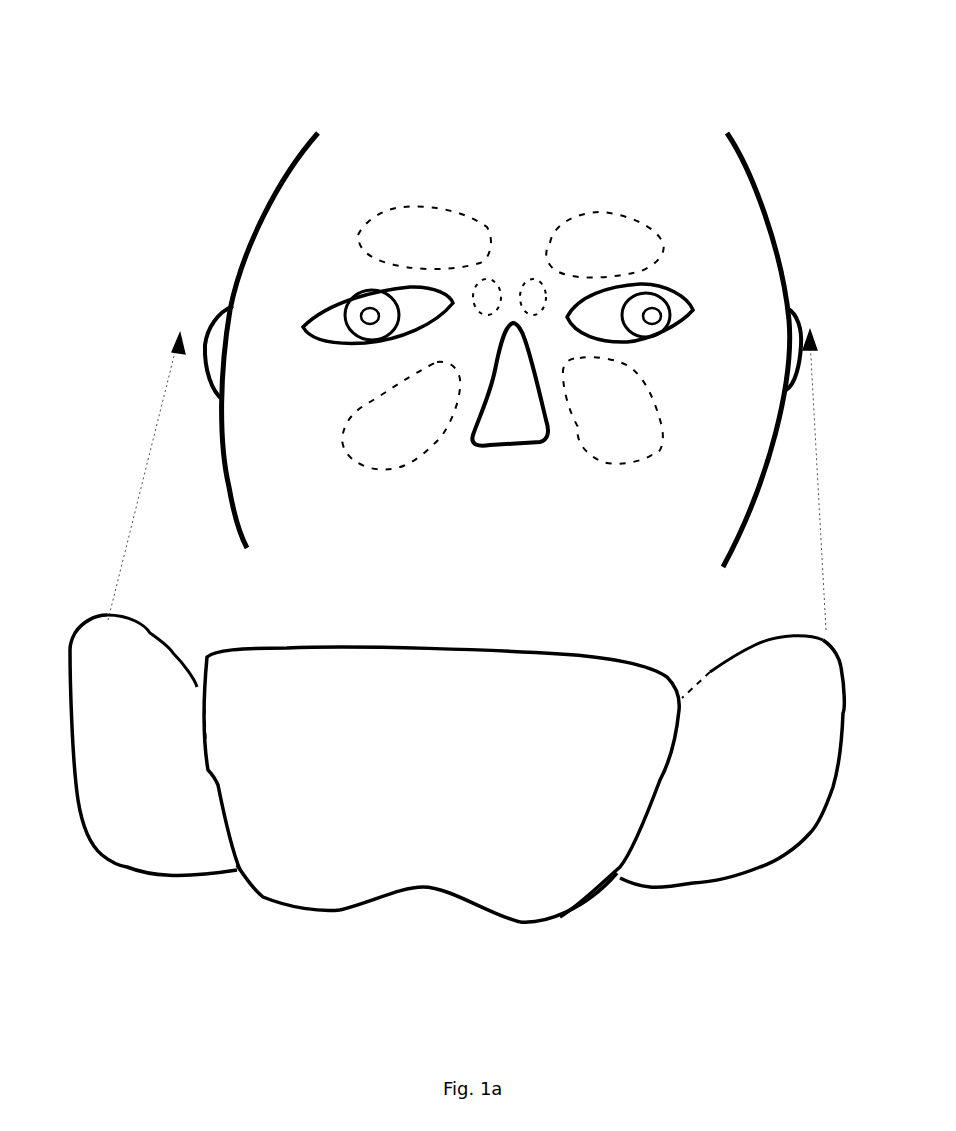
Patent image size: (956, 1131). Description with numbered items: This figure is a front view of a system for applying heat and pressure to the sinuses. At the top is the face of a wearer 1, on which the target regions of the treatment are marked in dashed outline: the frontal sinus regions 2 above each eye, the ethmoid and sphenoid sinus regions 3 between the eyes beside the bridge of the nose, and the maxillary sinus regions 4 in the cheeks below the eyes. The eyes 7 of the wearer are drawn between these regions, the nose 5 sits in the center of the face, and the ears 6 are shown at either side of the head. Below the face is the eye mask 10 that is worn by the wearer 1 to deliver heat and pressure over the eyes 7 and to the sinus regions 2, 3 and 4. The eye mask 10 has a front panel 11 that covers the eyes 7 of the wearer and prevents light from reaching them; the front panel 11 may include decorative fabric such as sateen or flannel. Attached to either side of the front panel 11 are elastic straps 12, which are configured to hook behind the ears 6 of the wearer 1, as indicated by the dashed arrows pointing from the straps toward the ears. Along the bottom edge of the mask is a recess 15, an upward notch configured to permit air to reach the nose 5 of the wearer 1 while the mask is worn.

The wearer 1 is at (650, 54).
The frontal sinus regions 2 is at (417, 200).
The ethmoid and sphenoid sinus regions 3 is at (520, 277).
The maxillary sinus regions 4 is at (337, 428).
The nose 5 is at (488, 428).
The ears 6 is at (208, 335).
The eyes 7 is at (330, 310).
The eye mask 10 is at (467, 780).
The front panel 11 is at (555, 907).
The elastic straps 12 is at (122, 867).
The recess 15 is at (428, 887).